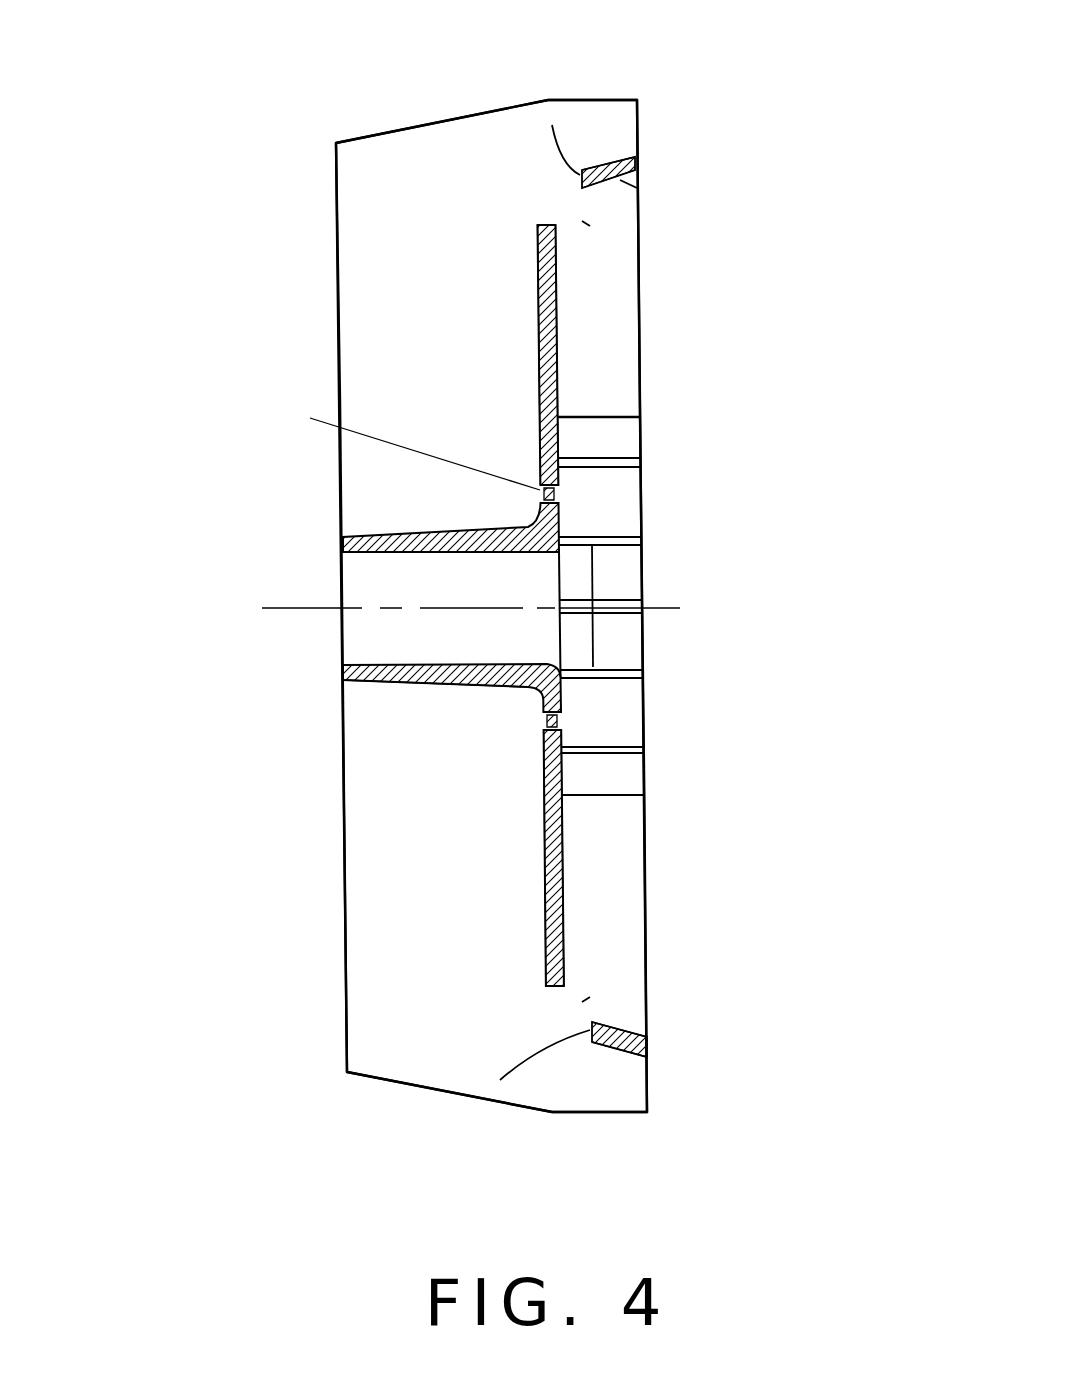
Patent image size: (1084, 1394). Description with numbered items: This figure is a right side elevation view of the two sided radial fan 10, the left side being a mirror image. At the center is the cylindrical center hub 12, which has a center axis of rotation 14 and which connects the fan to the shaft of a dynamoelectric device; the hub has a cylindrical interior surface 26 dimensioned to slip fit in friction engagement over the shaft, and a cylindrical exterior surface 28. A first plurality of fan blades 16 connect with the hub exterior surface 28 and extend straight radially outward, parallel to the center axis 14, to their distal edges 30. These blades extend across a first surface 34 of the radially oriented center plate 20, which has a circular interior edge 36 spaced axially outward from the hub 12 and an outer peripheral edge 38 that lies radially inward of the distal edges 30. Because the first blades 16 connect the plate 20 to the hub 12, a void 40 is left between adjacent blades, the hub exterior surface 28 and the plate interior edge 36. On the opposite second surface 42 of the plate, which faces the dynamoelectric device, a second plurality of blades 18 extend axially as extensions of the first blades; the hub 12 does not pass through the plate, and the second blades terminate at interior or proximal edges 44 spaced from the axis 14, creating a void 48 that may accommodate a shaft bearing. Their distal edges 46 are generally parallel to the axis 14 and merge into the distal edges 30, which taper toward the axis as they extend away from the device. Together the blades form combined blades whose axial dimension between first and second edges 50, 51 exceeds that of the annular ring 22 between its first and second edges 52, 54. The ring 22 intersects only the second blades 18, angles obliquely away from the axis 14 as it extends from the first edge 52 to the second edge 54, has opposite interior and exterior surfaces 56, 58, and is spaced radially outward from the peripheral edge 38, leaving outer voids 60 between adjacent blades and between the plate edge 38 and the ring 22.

The two sided radial fan 10 is at (692, 100).
The center hub 12 is at (385, 530).
The center axis of rotation 14 is at (297, 607).
The first plurality of fan blades 16 is at (392, 213).
The second plurality of blades 18 is at (627, 140).
The radially oriented plate 20 is at (562, 365).
The annular ring 22 is at (637, 188).
The cylindrical interior surface 26 is at (393, 665).
The cylindrical exterior surface 28 is at (418, 690).
The distal edges 30 is at (445, 117).
The first surface 34 is at (540, 377).
The circular interior edge 36 is at (543, 712).
The outer peripheral edge 38 is at (550, 227).
The void 40 is at (562, 492).
The second surface 42 is at (558, 398).
The interior or proximal edges 44 is at (643, 428).
The distal edges 46 is at (593, 100).
The void 48 is at (624, 640).
The first edge 50 is at (338, 278).
The second edge 51 is at (638, 298).
The first edge of the ring 52 is at (552, 125).
The second edge of the ring 54 is at (637, 163).
The interior surface 56 is at (620, 180).
The exterior surface 58 is at (607, 160).
The outer voids 60 is at (582, 221).